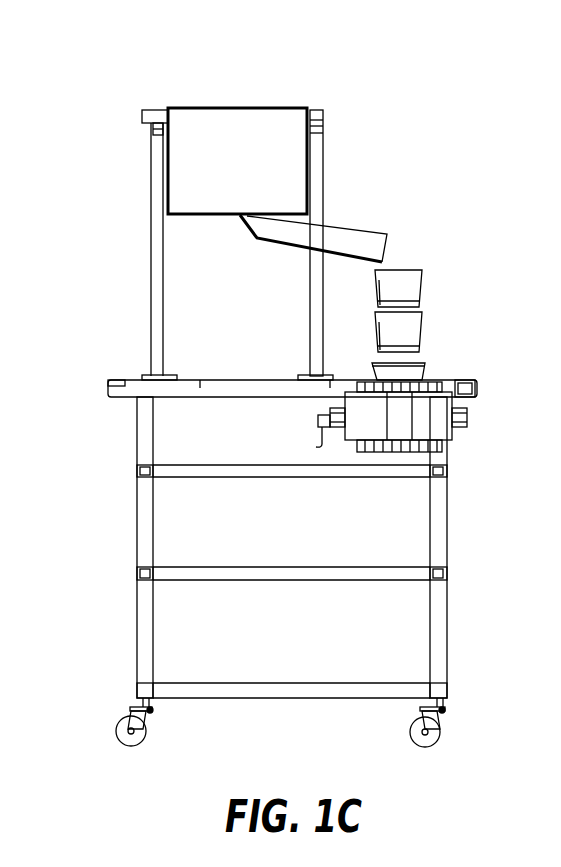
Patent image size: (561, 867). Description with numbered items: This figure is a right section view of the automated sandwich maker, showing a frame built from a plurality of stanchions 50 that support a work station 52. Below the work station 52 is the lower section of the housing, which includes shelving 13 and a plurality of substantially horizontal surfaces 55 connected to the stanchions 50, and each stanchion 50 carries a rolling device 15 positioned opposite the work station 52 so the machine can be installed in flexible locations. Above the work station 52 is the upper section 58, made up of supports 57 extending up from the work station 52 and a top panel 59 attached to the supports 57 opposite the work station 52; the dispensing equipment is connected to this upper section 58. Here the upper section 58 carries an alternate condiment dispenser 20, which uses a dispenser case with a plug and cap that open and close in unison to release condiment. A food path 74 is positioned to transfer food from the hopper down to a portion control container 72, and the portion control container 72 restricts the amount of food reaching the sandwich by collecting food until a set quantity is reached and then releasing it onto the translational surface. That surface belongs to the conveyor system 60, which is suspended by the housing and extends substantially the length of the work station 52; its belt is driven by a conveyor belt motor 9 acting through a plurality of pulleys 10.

The conveyor belt motor 9 is at (318, 420).
The pulleys 10 is at (468, 417).
The shelving 13 is at (325, 702).
The rolling device 15 is at (122, 745).
The alternate condiment dispenser 20 is at (250, 158).
The stanchions 50 is at (137, 636).
The work station 52 is at (108, 392).
The horizontal surfaces 55 is at (333, 733).
The supports 57 is at (151, 192).
The upper section 58 is at (128, 213).
The top panel 59 is at (142, 116).
The conveyor system 60 is at (465, 436).
The portion control container 72 is at (422, 288).
The food path 74 is at (355, 230).